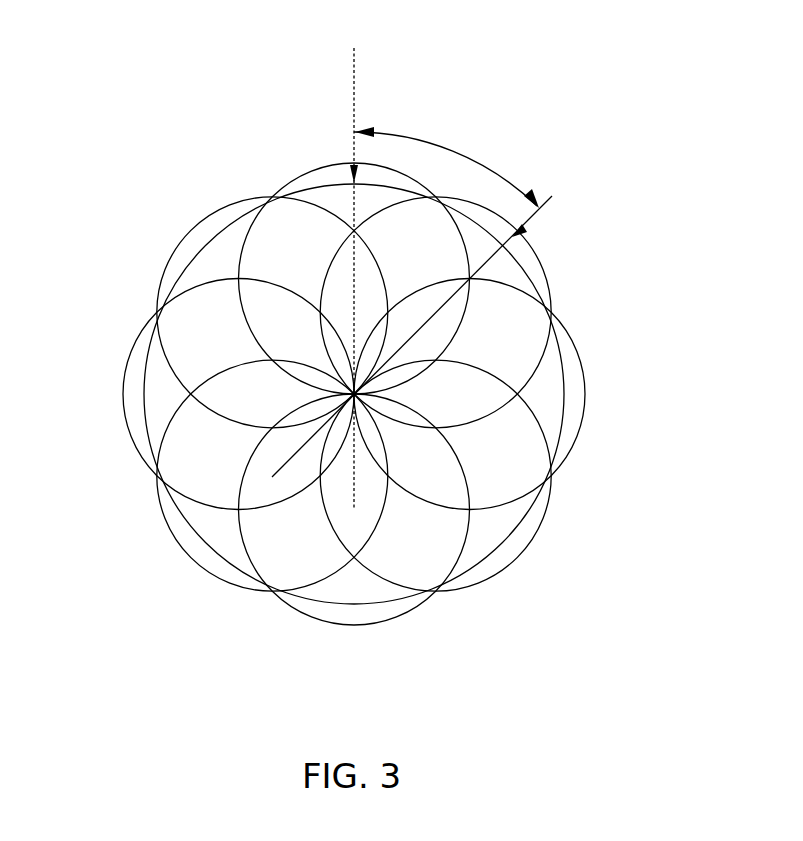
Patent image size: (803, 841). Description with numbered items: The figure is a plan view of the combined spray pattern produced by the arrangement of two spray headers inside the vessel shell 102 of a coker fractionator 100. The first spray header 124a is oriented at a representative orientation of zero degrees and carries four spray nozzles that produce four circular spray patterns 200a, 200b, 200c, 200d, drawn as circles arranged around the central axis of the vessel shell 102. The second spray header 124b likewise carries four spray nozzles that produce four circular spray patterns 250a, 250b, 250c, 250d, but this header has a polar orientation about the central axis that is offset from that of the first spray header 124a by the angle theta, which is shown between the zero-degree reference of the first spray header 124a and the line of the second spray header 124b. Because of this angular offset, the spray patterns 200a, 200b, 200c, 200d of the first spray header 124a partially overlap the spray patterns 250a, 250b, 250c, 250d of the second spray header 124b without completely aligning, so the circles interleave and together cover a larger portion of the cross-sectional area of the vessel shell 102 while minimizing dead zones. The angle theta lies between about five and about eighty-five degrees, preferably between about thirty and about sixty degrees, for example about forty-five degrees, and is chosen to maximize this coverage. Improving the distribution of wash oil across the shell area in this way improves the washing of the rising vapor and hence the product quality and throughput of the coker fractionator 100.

The coker fractionator 100 is at (148, 100).
The vessel shell 102 is at (200, 250).
The first spray header 124a is at (357, 88).
The second spray header 124b is at (552, 197).
The spray pattern 200a is at (303, 174).
The spray pattern 200b is at (123, 383).
The spray pattern 200c is at (352, 625).
The spray pattern 200d is at (585, 385).
The spray pattern 250a is at (545, 267).
The spray pattern 250b is at (206, 218).
The spray pattern 250c is at (175, 542).
The spray pattern 250d is at (517, 560).